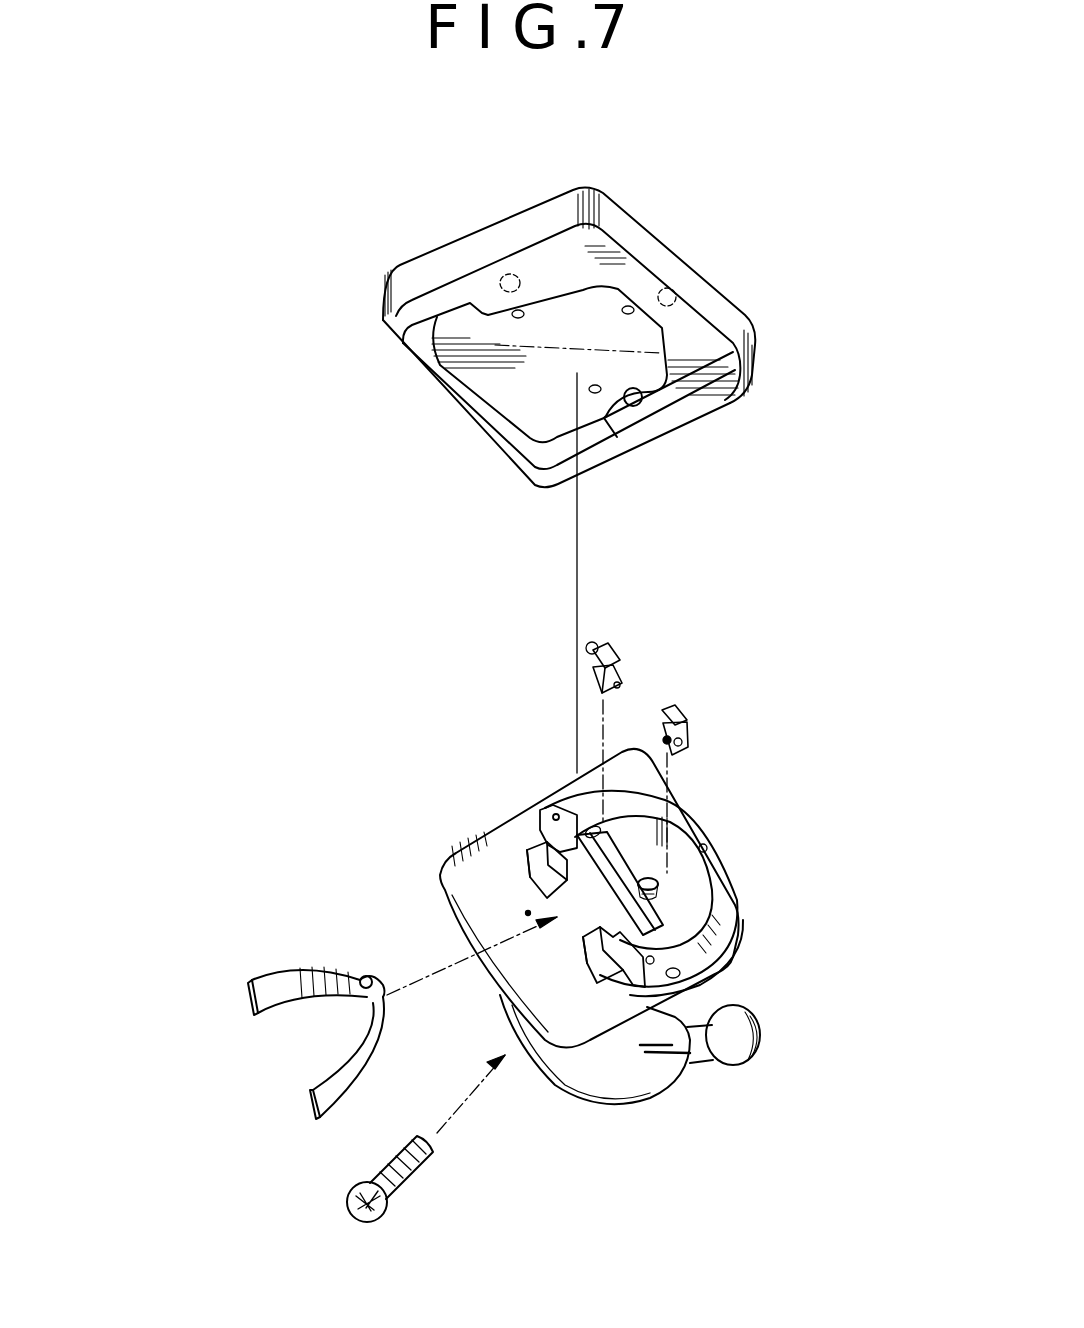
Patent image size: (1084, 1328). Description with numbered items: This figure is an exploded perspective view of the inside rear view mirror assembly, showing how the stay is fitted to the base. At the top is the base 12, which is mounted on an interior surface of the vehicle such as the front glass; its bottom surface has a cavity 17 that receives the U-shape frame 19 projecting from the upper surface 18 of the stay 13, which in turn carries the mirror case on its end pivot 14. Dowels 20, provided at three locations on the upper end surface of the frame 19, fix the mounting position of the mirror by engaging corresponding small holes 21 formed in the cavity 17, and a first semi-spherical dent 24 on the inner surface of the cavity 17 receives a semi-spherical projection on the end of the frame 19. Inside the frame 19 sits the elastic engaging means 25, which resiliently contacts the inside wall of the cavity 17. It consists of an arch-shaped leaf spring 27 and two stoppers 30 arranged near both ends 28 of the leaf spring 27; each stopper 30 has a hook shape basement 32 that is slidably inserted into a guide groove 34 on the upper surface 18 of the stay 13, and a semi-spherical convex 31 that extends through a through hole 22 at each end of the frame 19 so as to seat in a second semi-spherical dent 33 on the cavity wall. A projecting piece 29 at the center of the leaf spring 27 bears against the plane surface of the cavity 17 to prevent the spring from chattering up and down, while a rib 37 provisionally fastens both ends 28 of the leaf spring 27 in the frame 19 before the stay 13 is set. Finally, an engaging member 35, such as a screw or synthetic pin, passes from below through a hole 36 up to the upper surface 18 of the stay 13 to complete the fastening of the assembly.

The base 12 is at (617, 197).
The stay 13 is at (653, 1107).
The end pivot 14 is at (758, 1040).
The cavity 17 is at (498, 393).
The upper surface 18 is at (458, 870).
The U-shape frame 19 is at (723, 912).
The dowel 20 is at (708, 848).
The small hole 21 is at (633, 305).
The through hole 22 is at (595, 828).
The first semi-spherical dent 24 is at (677, 290).
The elastic engaging means 25 is at (320, 996).
The leaf spring 27 is at (322, 975).
The end of the leaf spring 28 is at (262, 978).
The projecting piece 29 is at (378, 961).
The stopper 30 is at (622, 652).
The semi-spherical convex 31 is at (598, 645).
The hook shape basement 32 is at (678, 712).
The second semi-spherical dent 33 is at (505, 278).
The guide groove 34 is at (605, 905).
The engaging member 35 is at (392, 1217).
The hole 36 is at (663, 888).
The rib 37 is at (538, 825).